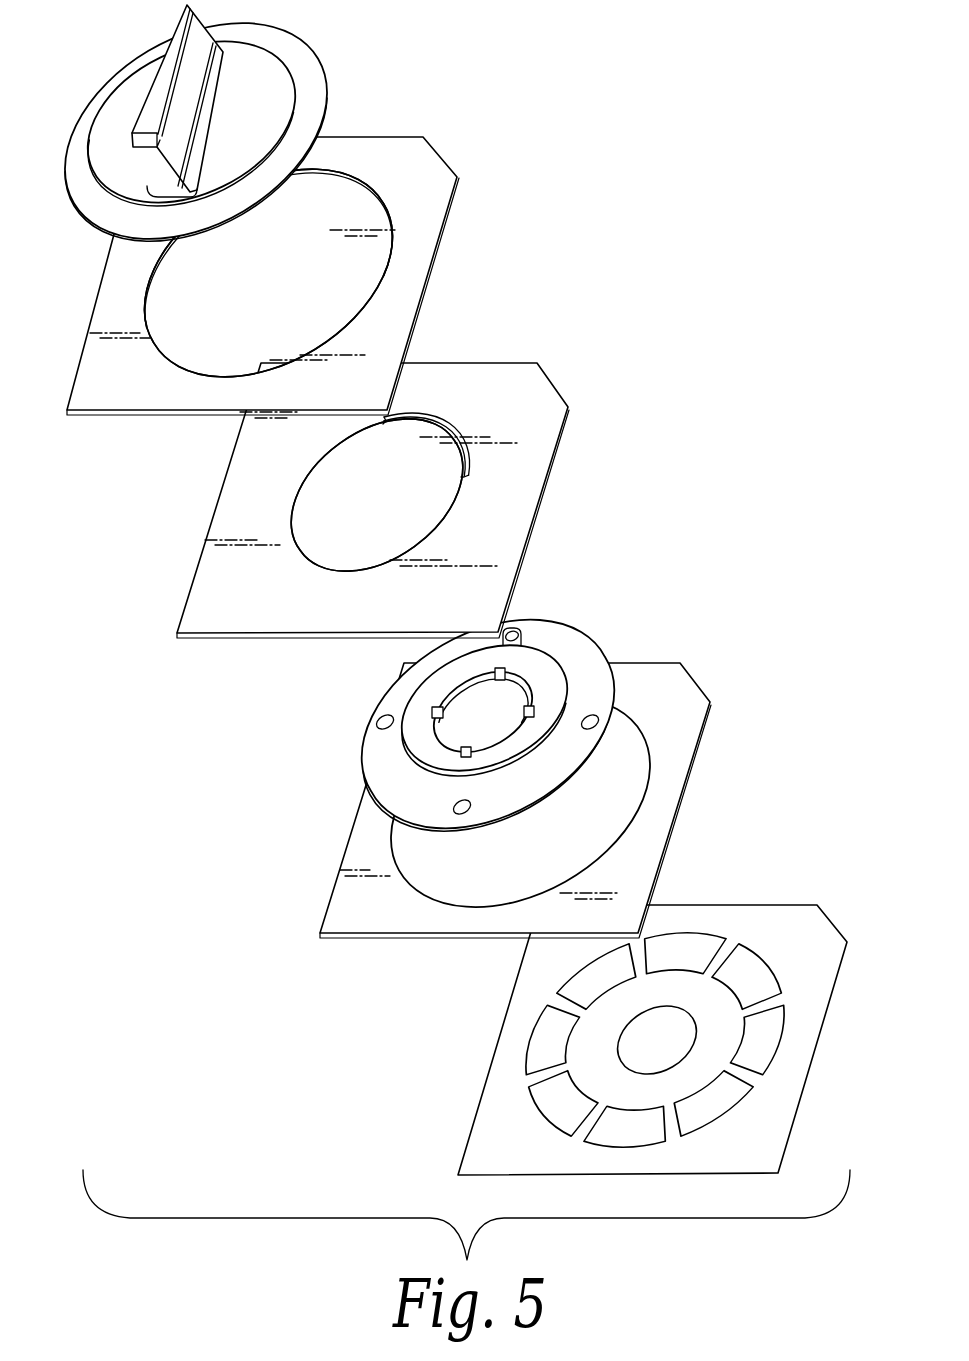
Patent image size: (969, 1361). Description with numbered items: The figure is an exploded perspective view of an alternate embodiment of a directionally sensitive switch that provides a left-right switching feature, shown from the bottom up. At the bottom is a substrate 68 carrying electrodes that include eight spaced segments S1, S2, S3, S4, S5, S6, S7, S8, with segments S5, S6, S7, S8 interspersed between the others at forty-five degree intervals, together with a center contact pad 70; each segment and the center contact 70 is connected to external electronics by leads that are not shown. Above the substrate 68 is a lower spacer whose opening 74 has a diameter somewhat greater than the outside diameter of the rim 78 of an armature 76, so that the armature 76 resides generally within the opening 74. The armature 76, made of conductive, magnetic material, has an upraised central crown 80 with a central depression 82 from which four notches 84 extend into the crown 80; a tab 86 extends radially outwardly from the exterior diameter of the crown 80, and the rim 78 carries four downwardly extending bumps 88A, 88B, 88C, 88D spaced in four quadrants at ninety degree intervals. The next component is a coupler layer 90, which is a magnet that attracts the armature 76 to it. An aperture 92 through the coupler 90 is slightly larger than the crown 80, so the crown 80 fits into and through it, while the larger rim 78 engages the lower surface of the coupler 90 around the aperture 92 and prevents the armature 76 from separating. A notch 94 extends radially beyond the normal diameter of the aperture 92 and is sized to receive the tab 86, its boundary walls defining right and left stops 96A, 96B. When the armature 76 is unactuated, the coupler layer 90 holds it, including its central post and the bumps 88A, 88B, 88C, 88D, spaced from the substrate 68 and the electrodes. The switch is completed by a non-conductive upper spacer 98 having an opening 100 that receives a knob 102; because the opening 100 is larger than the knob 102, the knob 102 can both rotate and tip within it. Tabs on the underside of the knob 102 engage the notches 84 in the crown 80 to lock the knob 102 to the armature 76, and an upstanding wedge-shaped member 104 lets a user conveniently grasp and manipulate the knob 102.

The substrate 68 is at (822, 985).
The center contact pad 70 is at (617, 1052).
The opening 74 is at (642, 786).
The armature 76 is at (484, 722).
The rim 78 is at (556, 772).
The crown 80 is at (532, 672).
The central depression 82 is at (457, 728).
The notches 84 is at (483, 712).
The tab 86 is at (513, 622).
The bump 88A is at (530, 635).
The bump 88B is at (590, 716).
The bump 88C is at (468, 805).
The bump 88D is at (376, 720).
The coupler layer 90 is at (533, 390).
The aperture 92 is at (293, 500).
The notch 94 is at (440, 432).
The right stop 96A is at (462, 452).
The left stop 96B is at (400, 437).
The upper spacer 98 is at (423, 163).
The opening 100 is at (152, 270).
The knob 102 is at (303, 85).
The wedge-shaped member 104 is at (197, 35).
The segment S1 is at (681, 953).
The segment S2 is at (759, 1040).
The segment S3 is at (629, 1126).
The segment S4 is at (552, 1040).
The segment S5 is at (749, 977).
The segment S6 is at (711, 1104).
The segment S7 is at (561, 1104).
The segment S8 is at (599, 977).